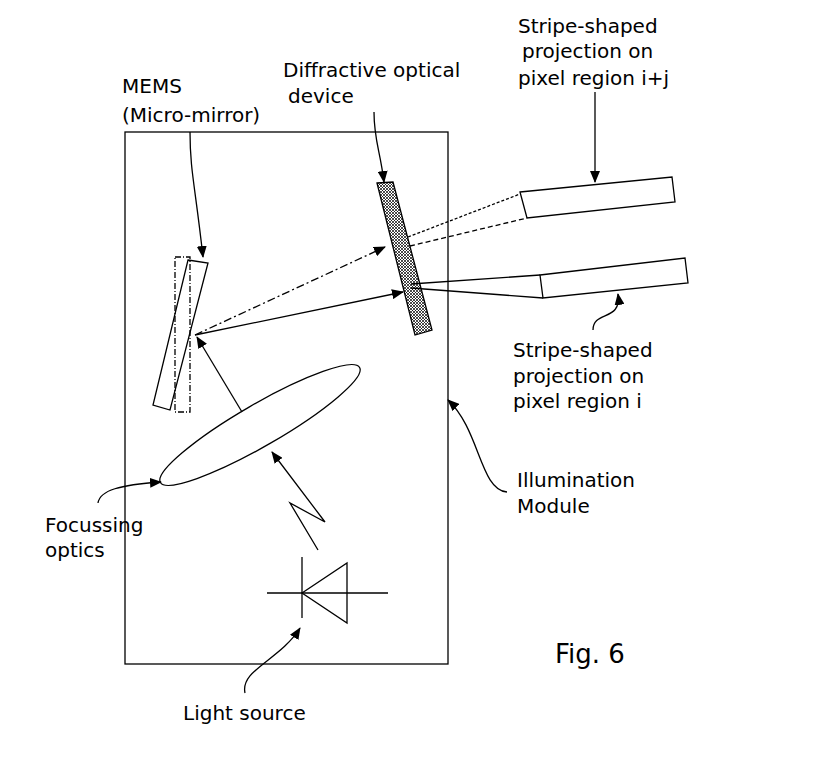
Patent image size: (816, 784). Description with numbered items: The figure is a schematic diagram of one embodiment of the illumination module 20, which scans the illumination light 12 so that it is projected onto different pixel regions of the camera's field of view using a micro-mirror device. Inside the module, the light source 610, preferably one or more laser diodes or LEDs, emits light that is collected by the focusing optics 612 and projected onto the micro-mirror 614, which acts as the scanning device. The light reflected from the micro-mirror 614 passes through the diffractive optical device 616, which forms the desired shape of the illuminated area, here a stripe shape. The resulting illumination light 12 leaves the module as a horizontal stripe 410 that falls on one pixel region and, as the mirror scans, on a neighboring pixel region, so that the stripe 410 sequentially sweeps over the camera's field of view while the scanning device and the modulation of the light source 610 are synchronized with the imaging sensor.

The illumination light 12 is at (500, 195).
The illumination module 20 is at (448, 527).
The horizontal stripe 410 is at (577, 215).
The light source 610 is at (350, 620).
The focusing optics 612 is at (193, 488).
The micro-mirror 614 is at (178, 347).
The diffractive optical device 616 is at (381, 213).